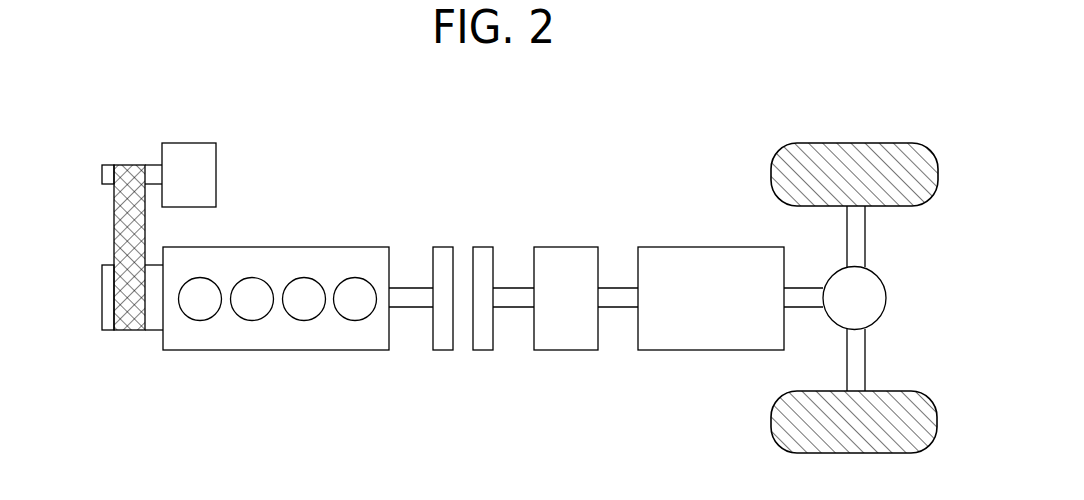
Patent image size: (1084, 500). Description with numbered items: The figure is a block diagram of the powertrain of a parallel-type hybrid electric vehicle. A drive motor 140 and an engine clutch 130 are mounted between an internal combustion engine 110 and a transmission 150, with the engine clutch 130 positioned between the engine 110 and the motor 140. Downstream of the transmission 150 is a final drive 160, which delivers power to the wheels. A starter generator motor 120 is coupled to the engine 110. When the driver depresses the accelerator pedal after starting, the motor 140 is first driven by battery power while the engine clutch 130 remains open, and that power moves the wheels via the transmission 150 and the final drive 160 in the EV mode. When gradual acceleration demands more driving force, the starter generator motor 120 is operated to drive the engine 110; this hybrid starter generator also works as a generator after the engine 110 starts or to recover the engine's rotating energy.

The internal combustion engine 110 is at (348, 245).
The starter generator motor 120 is at (222, 153).
The engine clutch 130 is at (488, 243).
The drive motor 140 is at (570, 245).
The transmission 150 is at (743, 245).
The final drive 160 is at (885, 282).